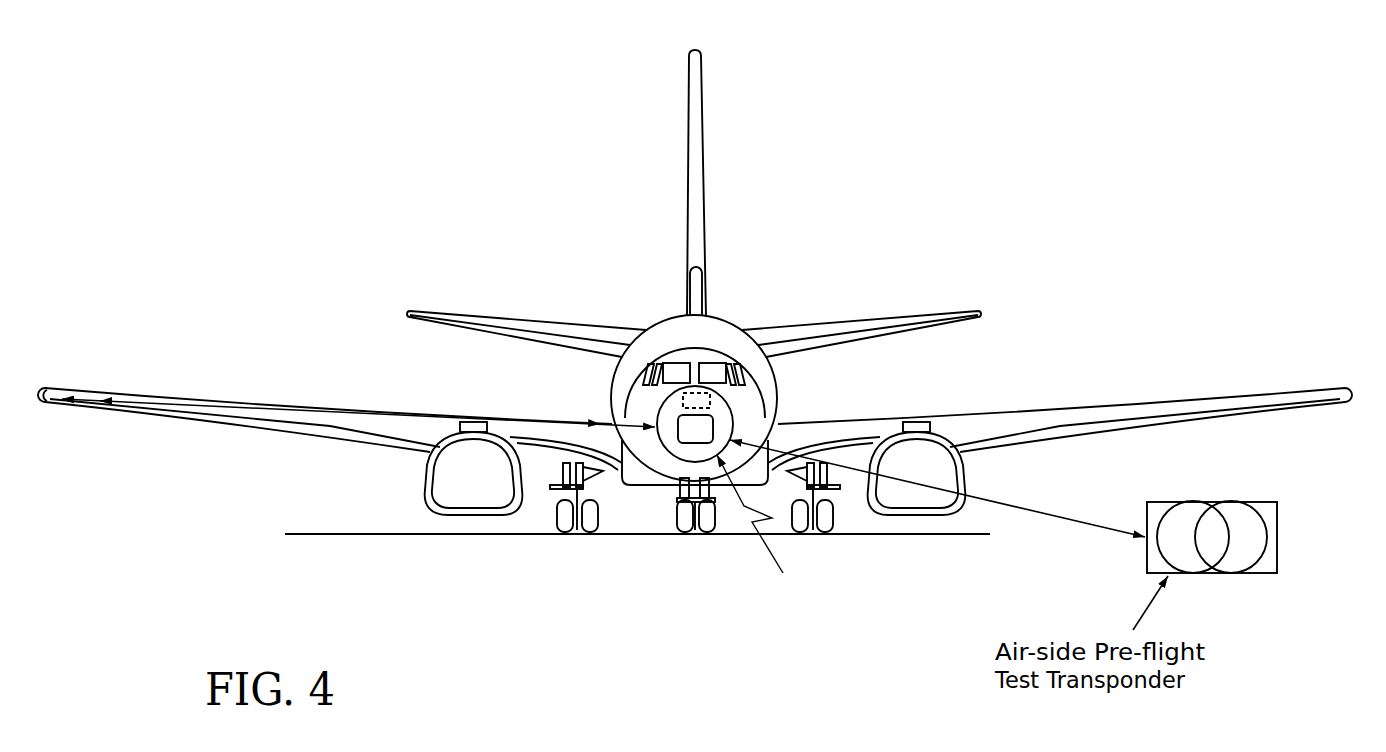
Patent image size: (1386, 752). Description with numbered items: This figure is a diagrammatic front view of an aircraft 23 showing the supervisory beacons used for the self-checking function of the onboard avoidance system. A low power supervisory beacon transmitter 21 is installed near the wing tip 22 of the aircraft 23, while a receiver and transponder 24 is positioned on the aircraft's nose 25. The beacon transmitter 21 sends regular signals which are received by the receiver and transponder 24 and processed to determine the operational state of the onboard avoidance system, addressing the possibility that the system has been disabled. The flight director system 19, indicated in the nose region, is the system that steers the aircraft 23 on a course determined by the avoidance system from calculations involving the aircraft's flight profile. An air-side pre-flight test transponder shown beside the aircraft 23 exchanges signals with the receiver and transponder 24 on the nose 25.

The transponder unit 19 is at (683, 400).
The wing-tip antenna 21 is at (69, 404).
The wing 22 is at (106, 378).
The aircraft 23 is at (695, 330).
The receiver antenna 24 is at (668, 453).
The nose radome 25 is at (734, 405).